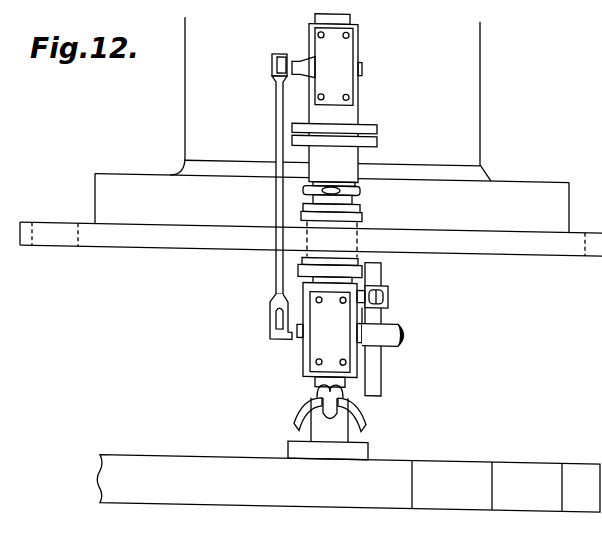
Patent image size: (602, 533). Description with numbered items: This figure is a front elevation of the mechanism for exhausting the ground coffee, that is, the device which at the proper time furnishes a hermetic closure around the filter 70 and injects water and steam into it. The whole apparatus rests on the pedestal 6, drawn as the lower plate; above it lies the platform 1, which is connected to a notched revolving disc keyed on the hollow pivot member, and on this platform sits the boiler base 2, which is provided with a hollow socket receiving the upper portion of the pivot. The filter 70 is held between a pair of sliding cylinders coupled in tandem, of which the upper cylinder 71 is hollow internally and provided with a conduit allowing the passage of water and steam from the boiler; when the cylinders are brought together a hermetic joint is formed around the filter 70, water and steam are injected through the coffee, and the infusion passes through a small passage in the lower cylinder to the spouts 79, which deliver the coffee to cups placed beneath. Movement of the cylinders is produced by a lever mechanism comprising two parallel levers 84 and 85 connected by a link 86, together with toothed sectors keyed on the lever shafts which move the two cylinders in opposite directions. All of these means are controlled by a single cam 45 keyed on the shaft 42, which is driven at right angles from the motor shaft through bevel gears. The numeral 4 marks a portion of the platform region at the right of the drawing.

The platform 1 is at (311, 239).
The boiler base 2 is at (332, 203).
The plate section 4 is at (585, 245).
The pedestal 6 is at (348, 484).
The shaft 42 is at (405, 340).
The cam 45 is at (378, 382).
The filter 70 is at (357, 238).
The upper sliding cylinder 71 is at (352, 118).
The spouts 79 is at (297, 416).
The lever 84 is at (284, 341).
The lever 85 is at (282, 47).
The link 86 is at (276, 207).